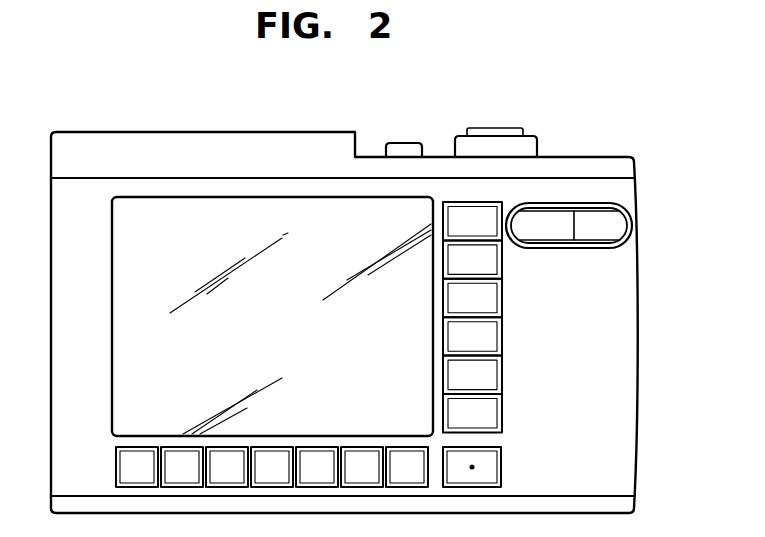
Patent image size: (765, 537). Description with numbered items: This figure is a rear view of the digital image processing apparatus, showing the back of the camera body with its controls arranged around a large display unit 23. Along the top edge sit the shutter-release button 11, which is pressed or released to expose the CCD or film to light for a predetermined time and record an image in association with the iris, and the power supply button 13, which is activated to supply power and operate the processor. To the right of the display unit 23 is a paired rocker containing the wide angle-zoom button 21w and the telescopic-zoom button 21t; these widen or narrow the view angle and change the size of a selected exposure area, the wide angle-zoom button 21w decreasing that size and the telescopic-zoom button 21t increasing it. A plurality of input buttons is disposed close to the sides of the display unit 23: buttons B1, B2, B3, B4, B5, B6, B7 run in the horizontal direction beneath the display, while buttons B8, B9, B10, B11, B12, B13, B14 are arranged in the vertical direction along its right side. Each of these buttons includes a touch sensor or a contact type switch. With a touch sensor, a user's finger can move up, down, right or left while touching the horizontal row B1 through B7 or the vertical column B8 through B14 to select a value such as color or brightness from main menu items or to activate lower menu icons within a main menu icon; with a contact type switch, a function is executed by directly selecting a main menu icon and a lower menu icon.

The shutter-release button 11 is at (495, 132).
The power supply button 13 is at (403, 150).
The display unit 23 is at (177, 212).
The wide angle-zoom button 21w is at (547, 225).
The telescopic-zoom button 21t is at (597, 225).
The input button B1 is at (137, 467).
The input button B2 is at (182, 467).
The input button B3 is at (227, 467).
The input button B4 is at (272, 467).
The input button B5 is at (317, 467).
The input button B6 is at (362, 467).
The input button B7 is at (407, 467).
The input button B8 is at (472, 221).
The input button B9 is at (472, 259).
The input button B10 is at (472, 298).
The input button B11 is at (472, 336).
The input button B12 is at (472, 375).
The input button B13 is at (472, 413).
The input button B14 is at (501, 467).